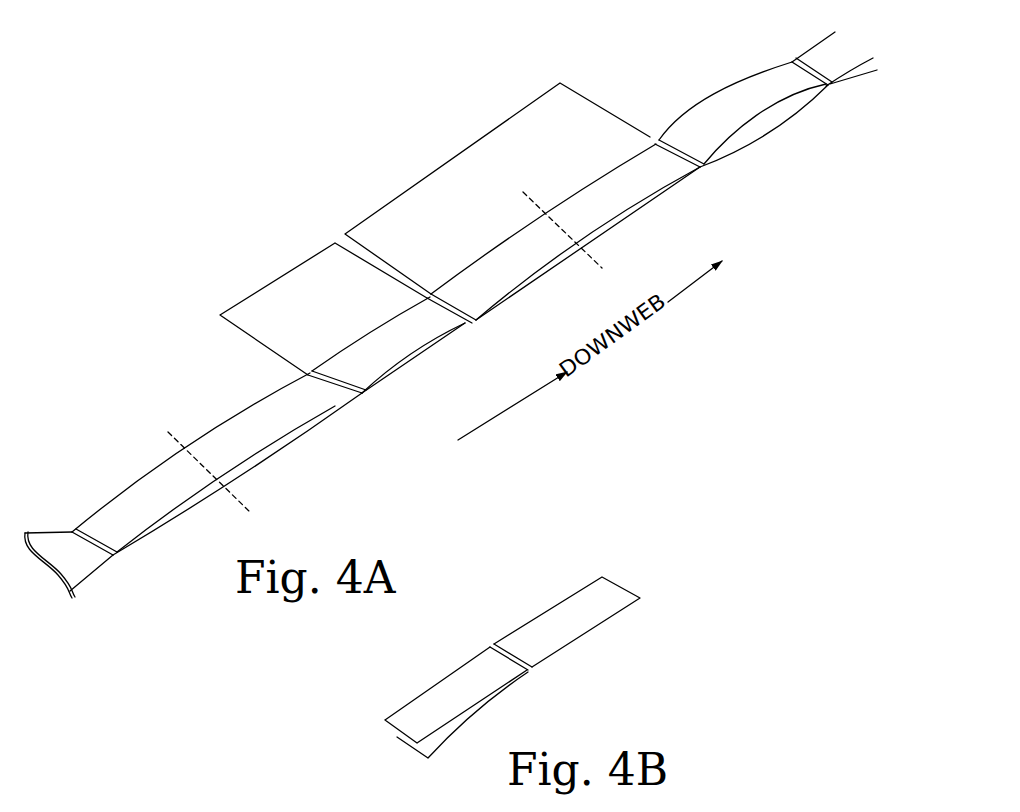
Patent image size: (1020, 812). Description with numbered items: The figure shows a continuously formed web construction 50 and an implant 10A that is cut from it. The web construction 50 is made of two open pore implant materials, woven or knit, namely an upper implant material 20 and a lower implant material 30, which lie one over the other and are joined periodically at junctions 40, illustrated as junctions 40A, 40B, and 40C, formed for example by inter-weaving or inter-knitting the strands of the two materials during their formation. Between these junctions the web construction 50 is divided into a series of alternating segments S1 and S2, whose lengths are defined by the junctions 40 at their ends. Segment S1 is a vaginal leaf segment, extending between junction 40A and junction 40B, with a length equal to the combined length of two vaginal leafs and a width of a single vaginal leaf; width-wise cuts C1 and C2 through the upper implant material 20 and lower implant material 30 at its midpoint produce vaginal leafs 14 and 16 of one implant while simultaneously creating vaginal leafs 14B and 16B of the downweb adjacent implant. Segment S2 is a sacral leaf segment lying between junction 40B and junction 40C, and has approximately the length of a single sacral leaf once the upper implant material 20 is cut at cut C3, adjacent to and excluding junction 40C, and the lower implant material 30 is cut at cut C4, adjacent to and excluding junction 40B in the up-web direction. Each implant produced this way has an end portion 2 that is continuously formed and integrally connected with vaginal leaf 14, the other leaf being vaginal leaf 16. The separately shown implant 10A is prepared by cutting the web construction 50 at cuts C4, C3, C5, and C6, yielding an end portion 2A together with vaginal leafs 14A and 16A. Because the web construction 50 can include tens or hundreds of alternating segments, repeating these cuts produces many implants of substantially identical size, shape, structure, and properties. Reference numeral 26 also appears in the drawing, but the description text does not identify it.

In FIG. 4A, the end portion 2 is at (345, 352).
In FIG. 4A, the end portion 2A is at (410, 360).
In FIG. 4B, the end portion 2A is at (558, 616).
In FIG. 4B, the implant 10A is at (485, 641).
In FIG. 4A, the vaginal leaf 14 is at (485, 257).
In FIG. 4A, the vaginal leaf 14A is at (270, 458).
In FIG. 4B, the vaginal leaf 14A is at (450, 736).
In FIG. 4A, the vaginal leaf 14B is at (625, 220).
In FIG. 4A, the vaginal leaf 16 is at (545, 272).
In FIG. 4A, the vaginal leaf 16A is at (216, 428).
In FIG. 4B, the vaginal leaf 16A is at (392, 716).
In FIG. 4A, the vaginal leaf 16B is at (593, 188).
In FIG. 4A, the upper implant material 20 is at (113, 506).
In FIG. 4A, the fold line 26 is at (768, 128).
In FIG. 4A, the lower implant material 30 is at (85, 574).
In FIG. 4A, the junction 40 is at (832, 82).
In FIG. 4A, the junction 40A is at (660, 142).
In FIG. 4B, the junction 40A is at (532, 663).
In FIG. 4A, the junction 40B is at (70, 530).
In FIG. 4A, the junction 40C is at (330, 406).
In FIG. 4A, the web construction 50 is at (366, 438).
In FIG. 4A, the vaginal leaf segment S1 is at (484, 137).
In FIG. 4A, the sacral leaf segment S2 is at (294, 268).
In FIG. 4A, the width-wise cut C1 is at (524, 193).
In FIG. 4A, the width-wise cut C2 is at (600, 271).
In FIG. 4A, the width-wise cut C3 is at (350, 386).
In FIG. 4A, the width-wise cut C4 is at (462, 330).
In FIG. 4B, the width-wise cut C4 is at (594, 573).
In FIG. 4A, the cut C5 is at (169, 434).
In FIG. 4B, the cut C5 is at (383, 727).
In FIG. 4A, the cut C6 is at (246, 503).
In FIG. 4B, the cut C6 is at (387, 739).